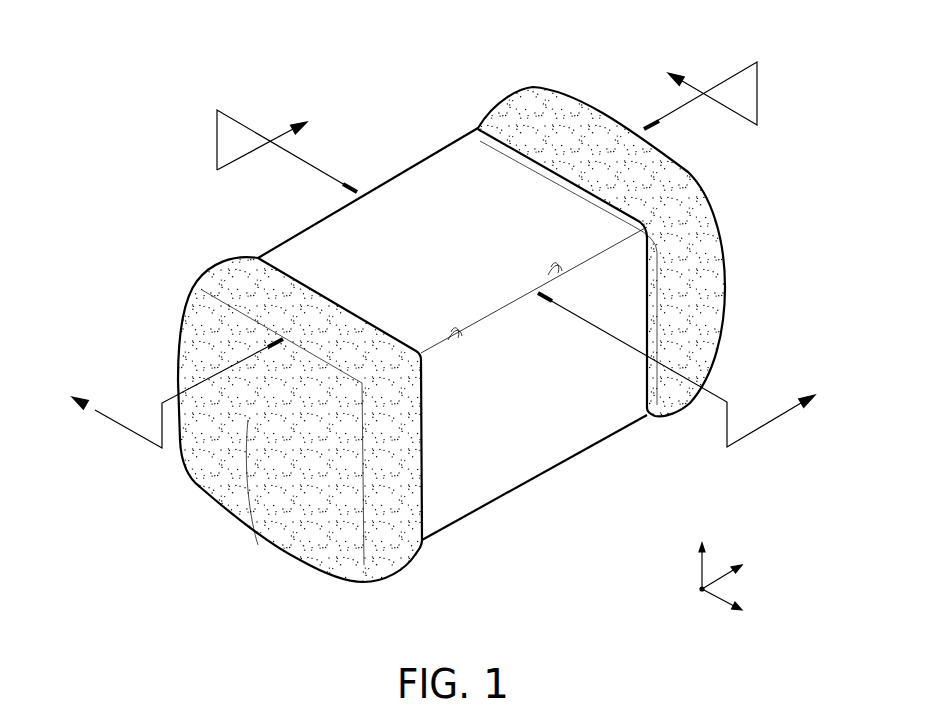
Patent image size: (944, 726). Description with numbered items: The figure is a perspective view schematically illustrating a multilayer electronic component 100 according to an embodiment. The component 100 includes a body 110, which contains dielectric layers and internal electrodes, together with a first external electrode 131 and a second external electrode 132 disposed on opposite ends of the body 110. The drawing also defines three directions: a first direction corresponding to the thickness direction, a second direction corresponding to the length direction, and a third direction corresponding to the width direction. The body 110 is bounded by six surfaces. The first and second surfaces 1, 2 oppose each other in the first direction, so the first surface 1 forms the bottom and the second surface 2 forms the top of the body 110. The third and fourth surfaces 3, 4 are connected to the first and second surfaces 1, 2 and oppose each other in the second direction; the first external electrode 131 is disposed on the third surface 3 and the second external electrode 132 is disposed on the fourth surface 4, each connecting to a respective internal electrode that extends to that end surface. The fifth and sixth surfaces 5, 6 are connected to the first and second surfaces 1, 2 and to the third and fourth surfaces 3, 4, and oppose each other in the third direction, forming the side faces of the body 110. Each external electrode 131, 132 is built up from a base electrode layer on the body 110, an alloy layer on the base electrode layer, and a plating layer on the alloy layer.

The multilayer electronic component 100 is at (298, 49).
The body 110 is at (318, 241).
The first external electrode 131 is at (243, 262).
The second external electrode 132 is at (510, 113).
The first surface 1 is at (504, 465).
The second surface 2 is at (458, 200).
The third surface 3 is at (283, 478).
The fourth surface 4 is at (690, 269).
The fifth surface 5 is at (407, 196).
The sixth surface 6 is at (528, 405).